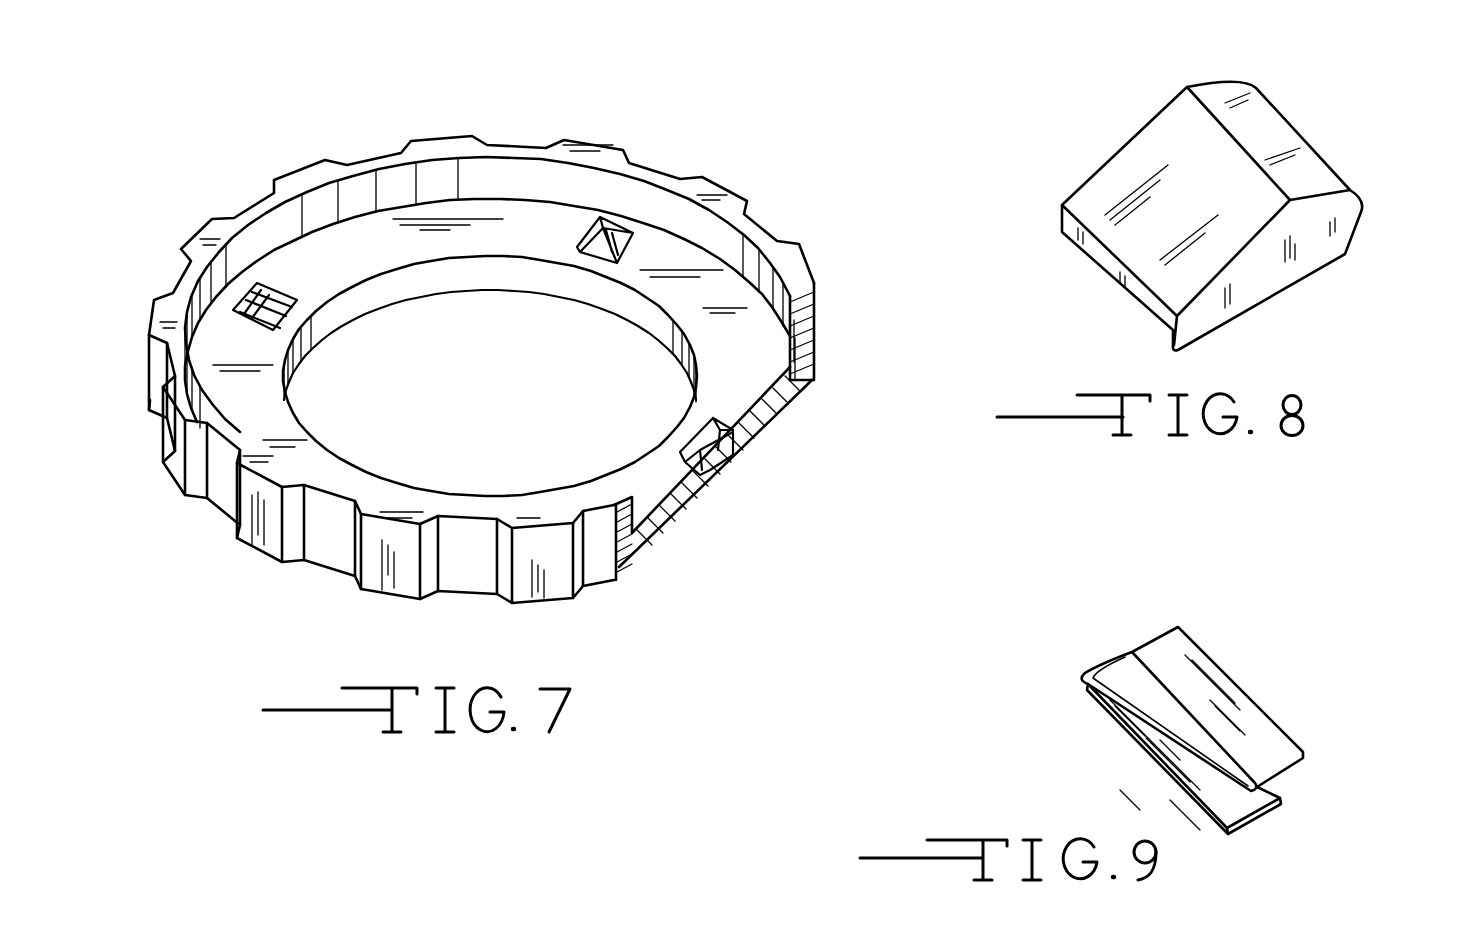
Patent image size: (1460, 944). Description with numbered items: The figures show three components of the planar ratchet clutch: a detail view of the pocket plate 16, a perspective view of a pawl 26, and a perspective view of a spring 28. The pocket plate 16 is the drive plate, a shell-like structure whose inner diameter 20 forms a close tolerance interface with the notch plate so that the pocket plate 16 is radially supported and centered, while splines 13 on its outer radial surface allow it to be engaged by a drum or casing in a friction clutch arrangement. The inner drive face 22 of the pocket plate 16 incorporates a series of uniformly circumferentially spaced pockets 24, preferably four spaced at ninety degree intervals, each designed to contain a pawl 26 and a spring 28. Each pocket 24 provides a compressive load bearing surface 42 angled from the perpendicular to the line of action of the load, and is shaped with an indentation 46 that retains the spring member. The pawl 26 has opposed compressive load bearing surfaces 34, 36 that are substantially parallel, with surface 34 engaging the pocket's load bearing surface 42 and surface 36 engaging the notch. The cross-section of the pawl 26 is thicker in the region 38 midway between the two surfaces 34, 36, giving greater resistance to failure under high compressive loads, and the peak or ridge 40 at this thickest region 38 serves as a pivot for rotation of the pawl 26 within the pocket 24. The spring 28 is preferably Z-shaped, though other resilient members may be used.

In FIG. 7, the splines 13 is at (548, 592).
In FIG. 7, the pocket plate 16 is at (740, 194).
In FIG. 7, the inner diameter 20 is at (568, 175).
In FIG. 7, the inner drive face 22 is at (757, 353).
In FIG. 7, the pocket 24 is at (612, 230).
In FIG. 7, the compressive load bearing surface 42 is at (320, 298).
In FIG. 7, the indentation 46 is at (743, 451).
In FIG. 8, the pawl 26 is at (1270, 267).
In FIG. 8, the compressive load bearing surface 34 is at (1361, 205).
In FIG. 8, the compressive load bearing surface 36 is at (1113, 273).
In FIG. 8, the thickest region 38 is at (1320, 213).
In FIG. 8, the peak or ridge 40 is at (1247, 143).
In FIG. 9, the spring 28 is at (1233, 703).